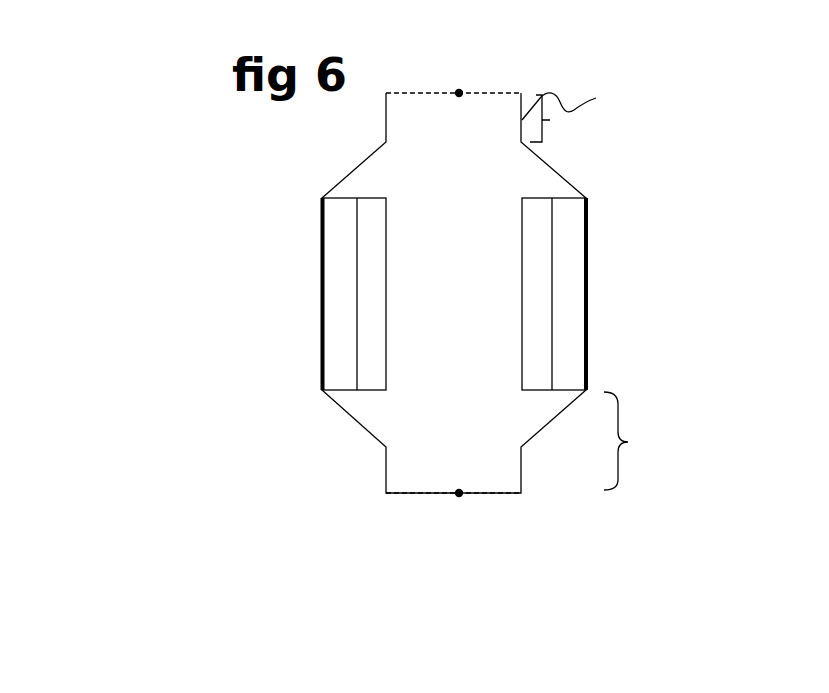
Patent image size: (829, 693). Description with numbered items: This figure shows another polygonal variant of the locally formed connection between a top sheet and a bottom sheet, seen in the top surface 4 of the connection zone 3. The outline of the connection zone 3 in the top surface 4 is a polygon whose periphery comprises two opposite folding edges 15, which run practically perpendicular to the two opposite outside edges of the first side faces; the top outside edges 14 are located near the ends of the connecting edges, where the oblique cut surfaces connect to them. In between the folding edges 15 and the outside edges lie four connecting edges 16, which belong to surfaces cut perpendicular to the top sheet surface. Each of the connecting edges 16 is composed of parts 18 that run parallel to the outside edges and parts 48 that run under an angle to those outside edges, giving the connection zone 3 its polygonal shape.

The connection zone 3 is at (430, 281).
The top surface 4 is at (454, 293).
The top outside edges 14 is at (322, 262).
The folding edges 15 is at (459, 93).
The connecting edges 16 is at (628, 442).
The parts of connecting edges running parallel to outside edges 18 is at (560, 118).
The parts of connecting edges running under an angle to outside edges 48 is at (571, 98).